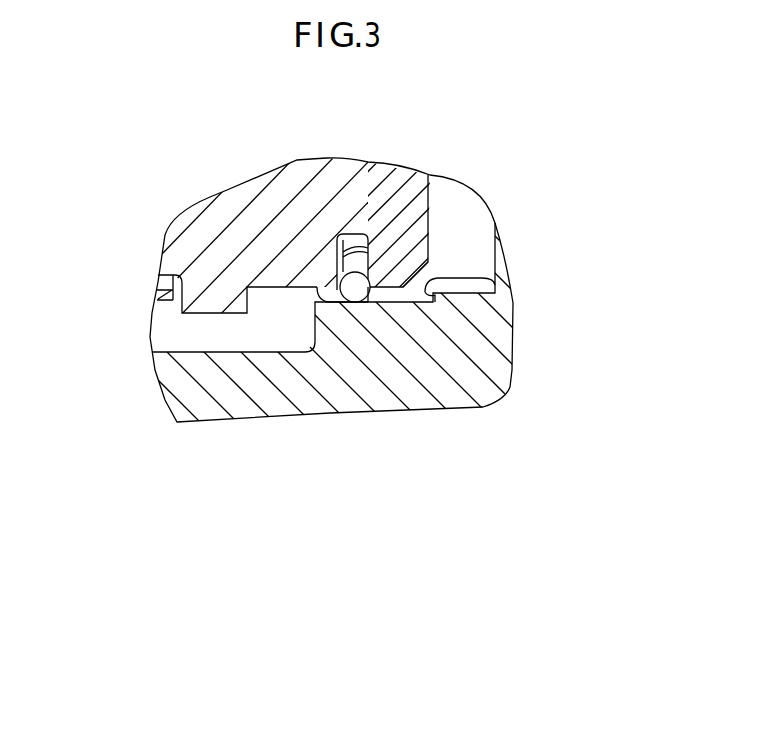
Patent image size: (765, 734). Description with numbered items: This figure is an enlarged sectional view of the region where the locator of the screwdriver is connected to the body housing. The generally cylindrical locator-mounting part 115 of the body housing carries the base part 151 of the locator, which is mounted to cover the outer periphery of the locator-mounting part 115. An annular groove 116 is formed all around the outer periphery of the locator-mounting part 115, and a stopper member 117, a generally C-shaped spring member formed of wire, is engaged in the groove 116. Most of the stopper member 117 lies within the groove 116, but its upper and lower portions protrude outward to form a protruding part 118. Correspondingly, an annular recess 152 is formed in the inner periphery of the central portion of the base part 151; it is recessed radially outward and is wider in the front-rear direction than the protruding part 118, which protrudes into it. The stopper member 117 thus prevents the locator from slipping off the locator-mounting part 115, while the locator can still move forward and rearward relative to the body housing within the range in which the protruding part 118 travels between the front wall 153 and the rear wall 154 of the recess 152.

The locator-mounting part 115 is at (277, 193).
The base part 151 is at (495, 367).
The recess 152 is at (387, 288).
The front wall 153 is at (432, 280).
The rear wall 154 is at (342, 283).
The groove 116 is at (367, 305).
The stopper member 117 is at (357, 297).
The protruding part 118 is at (357, 292).